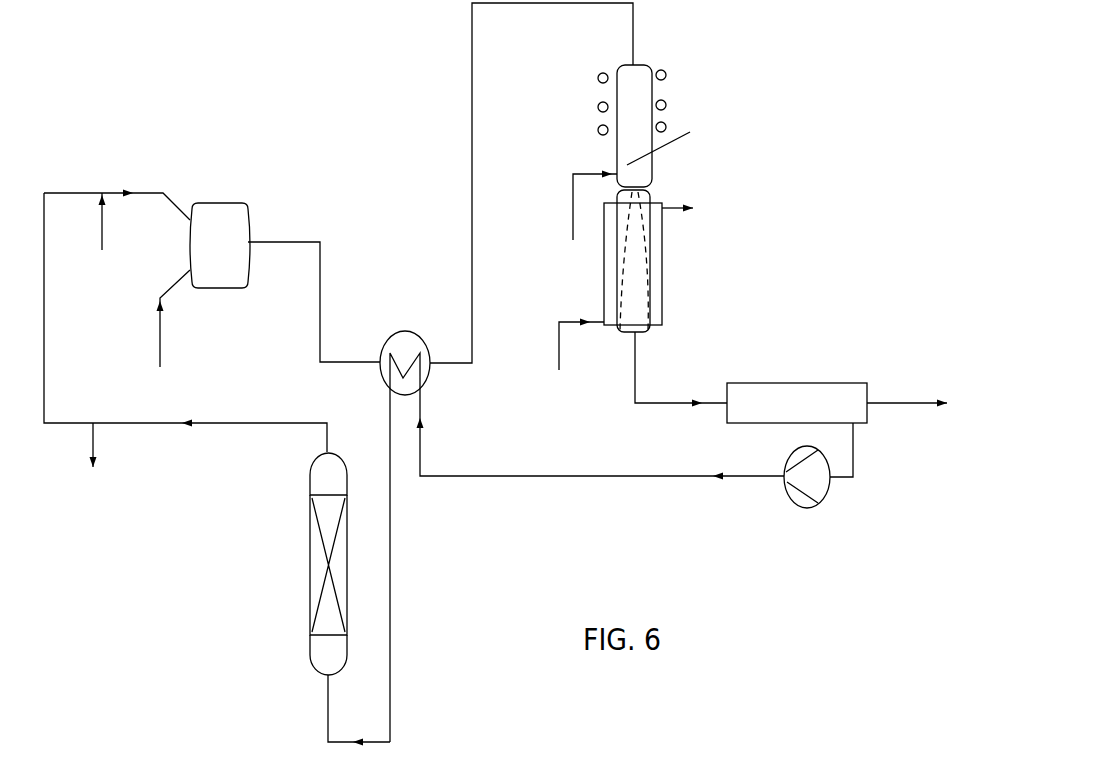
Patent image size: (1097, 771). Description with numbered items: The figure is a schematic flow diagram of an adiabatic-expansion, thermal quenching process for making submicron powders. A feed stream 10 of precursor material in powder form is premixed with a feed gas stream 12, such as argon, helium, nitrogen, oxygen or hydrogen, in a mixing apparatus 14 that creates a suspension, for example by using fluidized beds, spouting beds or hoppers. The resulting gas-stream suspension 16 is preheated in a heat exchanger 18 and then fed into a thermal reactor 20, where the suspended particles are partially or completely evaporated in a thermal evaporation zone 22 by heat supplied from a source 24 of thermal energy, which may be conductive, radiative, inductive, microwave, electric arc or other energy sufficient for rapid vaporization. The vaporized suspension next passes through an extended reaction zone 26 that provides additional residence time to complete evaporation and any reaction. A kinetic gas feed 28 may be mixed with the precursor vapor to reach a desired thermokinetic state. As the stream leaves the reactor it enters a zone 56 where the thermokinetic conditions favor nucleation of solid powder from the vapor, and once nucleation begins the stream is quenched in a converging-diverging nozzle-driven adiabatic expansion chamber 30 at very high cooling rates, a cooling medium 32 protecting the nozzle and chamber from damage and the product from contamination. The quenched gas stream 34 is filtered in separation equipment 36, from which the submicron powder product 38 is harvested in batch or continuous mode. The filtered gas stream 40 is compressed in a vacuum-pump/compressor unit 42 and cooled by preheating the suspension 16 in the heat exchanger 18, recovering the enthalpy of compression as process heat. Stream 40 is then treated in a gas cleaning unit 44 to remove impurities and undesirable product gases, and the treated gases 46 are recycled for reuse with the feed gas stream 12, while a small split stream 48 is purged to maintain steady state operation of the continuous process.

The feed stream 10 is at (161, 352).
The feed gas stream 12 is at (105, 234).
The mixing apparatus 14 is at (248, 217).
The gas-stream suspension 16 is at (321, 270).
The heat exchanger 18 is at (412, 331).
The thermal reactor 20 is at (649, 58).
The thermal evaporation zone 22 is at (628, 97).
The source of thermal energy 24 is at (666, 125).
The extended reaction zone 26 is at (632, 170).
The kinetic gas feed 28 is at (572, 202).
The adiabatic expansion chamber 30 is at (664, 243).
The cooling medium 32 is at (558, 341).
The quenched gas stream 34 is at (637, 366).
The separation equipment 36 is at (783, 383).
The submicron powder product 38 is at (907, 403).
The filtered gas stream 40 is at (392, 592).
The vacuum-pump/compressor unit 42 is at (830, 489).
The gas cleaning unit 44 is at (310, 645).
The treated gases 46 is at (252, 423).
The split stream 48 is at (90, 444).
The nucleation zone 56 is at (648, 193).